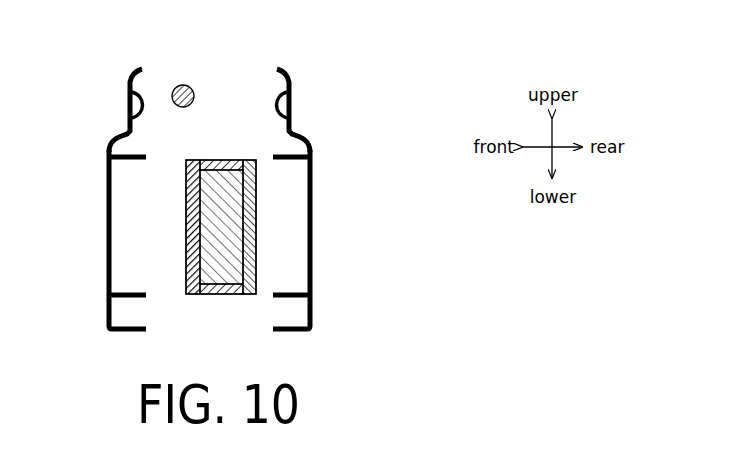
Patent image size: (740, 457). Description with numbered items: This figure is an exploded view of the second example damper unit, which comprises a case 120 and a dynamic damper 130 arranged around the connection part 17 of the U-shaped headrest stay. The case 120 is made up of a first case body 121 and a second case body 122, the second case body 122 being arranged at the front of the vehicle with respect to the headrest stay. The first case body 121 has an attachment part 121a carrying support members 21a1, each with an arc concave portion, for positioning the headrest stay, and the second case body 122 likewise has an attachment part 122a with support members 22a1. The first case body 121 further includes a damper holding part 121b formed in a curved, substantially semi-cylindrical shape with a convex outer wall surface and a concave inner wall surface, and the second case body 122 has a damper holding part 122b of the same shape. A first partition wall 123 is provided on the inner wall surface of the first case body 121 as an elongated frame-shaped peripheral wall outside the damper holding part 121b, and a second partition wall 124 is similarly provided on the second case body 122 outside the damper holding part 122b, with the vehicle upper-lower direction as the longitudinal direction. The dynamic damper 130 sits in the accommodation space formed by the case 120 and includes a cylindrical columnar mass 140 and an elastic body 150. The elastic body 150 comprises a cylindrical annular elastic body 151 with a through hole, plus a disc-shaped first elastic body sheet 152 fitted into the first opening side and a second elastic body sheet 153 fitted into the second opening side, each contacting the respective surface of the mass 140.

The case 120 is at (221, 204).
The first case body 121 is at (343, 190).
The second case body 122 is at (87, 188).
The attachment part 121a is at (292, 76).
The attachment part 122a is at (128, 74).
The support member 21a1 is at (290, 110).
The support member 22a1 is at (130, 110).
The damper holding part 121b is at (313, 292).
The damper holding part 122b is at (107, 295).
The first partition wall 123 is at (298, 142).
The second partition wall 124 is at (117, 139).
The dynamic damper 130 is at (329, 227).
The mass 140 is at (254, 277).
The elastic body 150 is at (305, 227).
The annular elastic body 151 is at (255, 196).
The first elastic body sheet 152 is at (253, 171).
The second elastic body sheet 153 is at (255, 241).
The connection part 17 is at (184, 84).